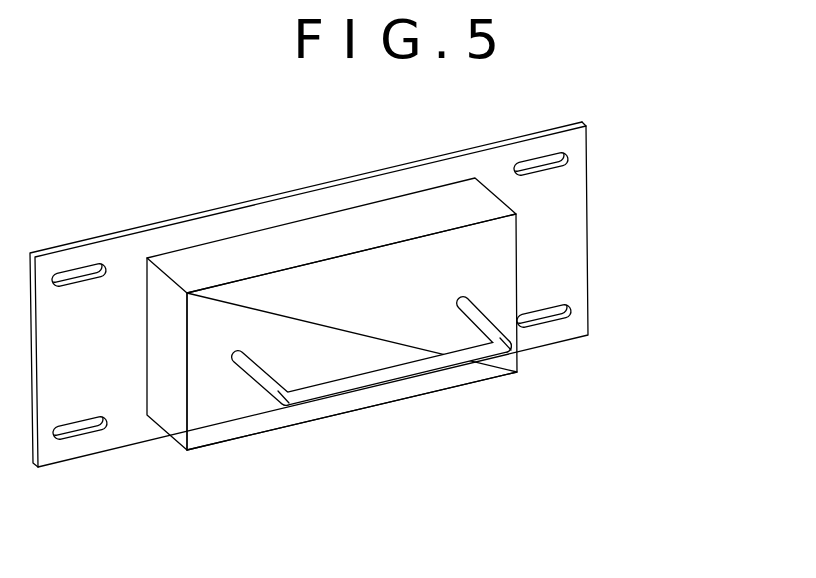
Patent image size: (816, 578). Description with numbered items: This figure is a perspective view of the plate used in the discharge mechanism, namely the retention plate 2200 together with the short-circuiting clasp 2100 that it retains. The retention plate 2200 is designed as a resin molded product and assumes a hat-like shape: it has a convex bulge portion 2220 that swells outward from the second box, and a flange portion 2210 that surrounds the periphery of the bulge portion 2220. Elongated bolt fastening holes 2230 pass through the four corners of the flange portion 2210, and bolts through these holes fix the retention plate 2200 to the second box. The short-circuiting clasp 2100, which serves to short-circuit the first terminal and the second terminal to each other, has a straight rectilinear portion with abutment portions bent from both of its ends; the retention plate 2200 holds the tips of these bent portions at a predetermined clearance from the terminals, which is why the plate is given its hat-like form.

The short-circuiting clasp 2100 is at (389, 426).
The retention plate 2200 is at (404, 294).
The flange portion 2210 is at (361, 294).
The bulge portion 2220 is at (498, 293).
The bolt fastening holes 2230 is at (548, 160).